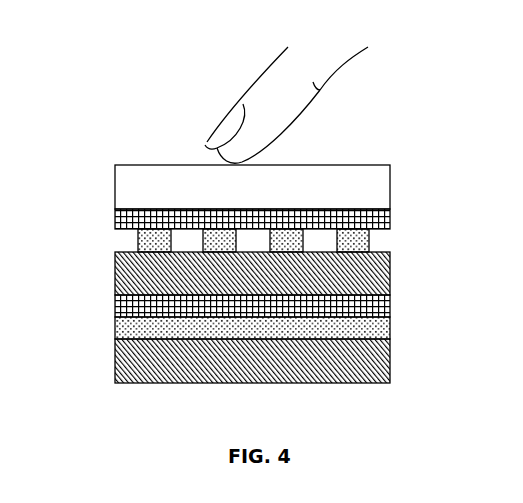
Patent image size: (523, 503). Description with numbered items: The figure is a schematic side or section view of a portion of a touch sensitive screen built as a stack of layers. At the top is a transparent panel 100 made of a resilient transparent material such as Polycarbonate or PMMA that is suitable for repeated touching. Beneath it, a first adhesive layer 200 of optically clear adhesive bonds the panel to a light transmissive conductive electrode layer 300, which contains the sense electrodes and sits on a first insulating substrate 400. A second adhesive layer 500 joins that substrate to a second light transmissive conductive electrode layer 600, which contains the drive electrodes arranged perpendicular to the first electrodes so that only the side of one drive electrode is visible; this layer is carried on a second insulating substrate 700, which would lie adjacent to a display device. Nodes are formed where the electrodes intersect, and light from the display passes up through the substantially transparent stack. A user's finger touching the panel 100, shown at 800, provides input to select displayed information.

The transparent panel 100 is at (392, 187).
The first adhesive layer 200 is at (116, 223).
The light transmissive conductive electrode layer 300 is at (371, 241).
The first insulating substrate 400 is at (116, 275).
The second adhesive layer 500 is at (391, 305).
The second light transmissive conductive electrode layer 600 is at (116, 328).
The second insulating substrate 700 is at (391, 360).
The touch 800 is at (257, 80).